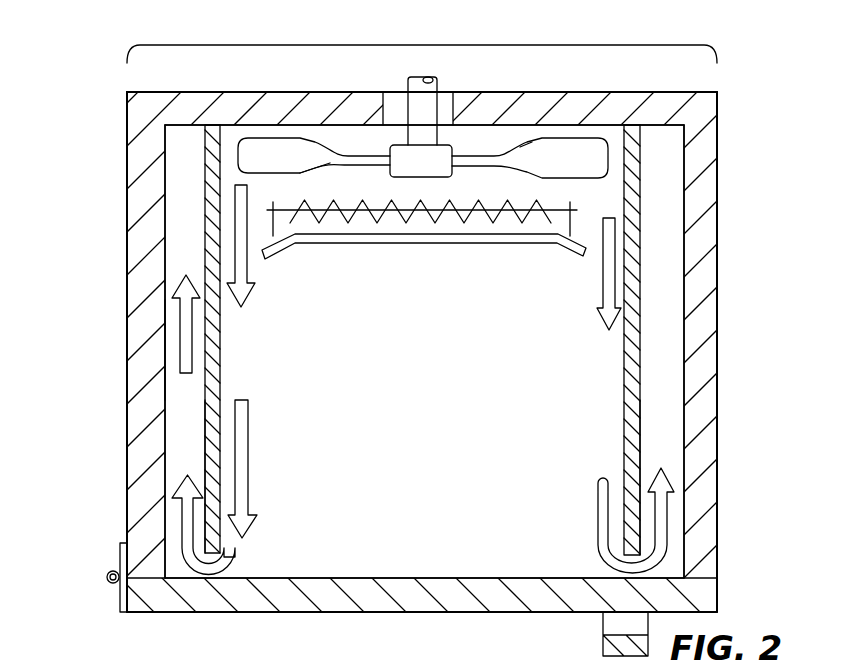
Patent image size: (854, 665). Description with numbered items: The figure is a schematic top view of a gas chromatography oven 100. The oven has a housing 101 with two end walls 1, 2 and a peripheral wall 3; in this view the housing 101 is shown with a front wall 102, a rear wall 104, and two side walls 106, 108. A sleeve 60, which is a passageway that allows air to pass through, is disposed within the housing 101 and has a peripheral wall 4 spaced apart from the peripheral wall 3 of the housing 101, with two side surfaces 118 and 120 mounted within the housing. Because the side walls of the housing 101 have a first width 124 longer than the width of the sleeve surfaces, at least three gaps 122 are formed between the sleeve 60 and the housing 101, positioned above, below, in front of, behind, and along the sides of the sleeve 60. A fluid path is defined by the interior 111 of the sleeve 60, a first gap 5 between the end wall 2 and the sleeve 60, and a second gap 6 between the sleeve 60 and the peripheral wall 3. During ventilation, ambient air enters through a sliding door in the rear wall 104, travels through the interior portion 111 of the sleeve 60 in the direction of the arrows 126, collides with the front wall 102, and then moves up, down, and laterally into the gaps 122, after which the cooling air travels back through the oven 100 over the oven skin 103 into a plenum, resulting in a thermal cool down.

The gas chromatography oven 100 is at (718, 90).
The first width 124 is at (430, 45).
The end wall 1 is at (332, 104).
The rear wall 104 is at (597, 92).
The housing 101 is at (127, 145).
The oven skin 103 is at (165, 163).
The gaps 122 is at (185, 145).
The peripheral wall 3 is at (165, 289).
The side wall 106 is at (127, 334).
The side wall 108 is at (717, 329).
The second gap 6 is at (188, 386).
The side surface 118 is at (220, 410).
The sleeve 60 is at (215, 438).
The peripheral wall 4 is at (205, 452).
The side surface 120 is at (630, 428).
The arrows 126 is at (187, 510).
The end wall 2 is at (188, 583).
The interior of the sleeve 111 is at (352, 470).
The front wall 102 is at (386, 612).
The first gap 5 is at (428, 578).